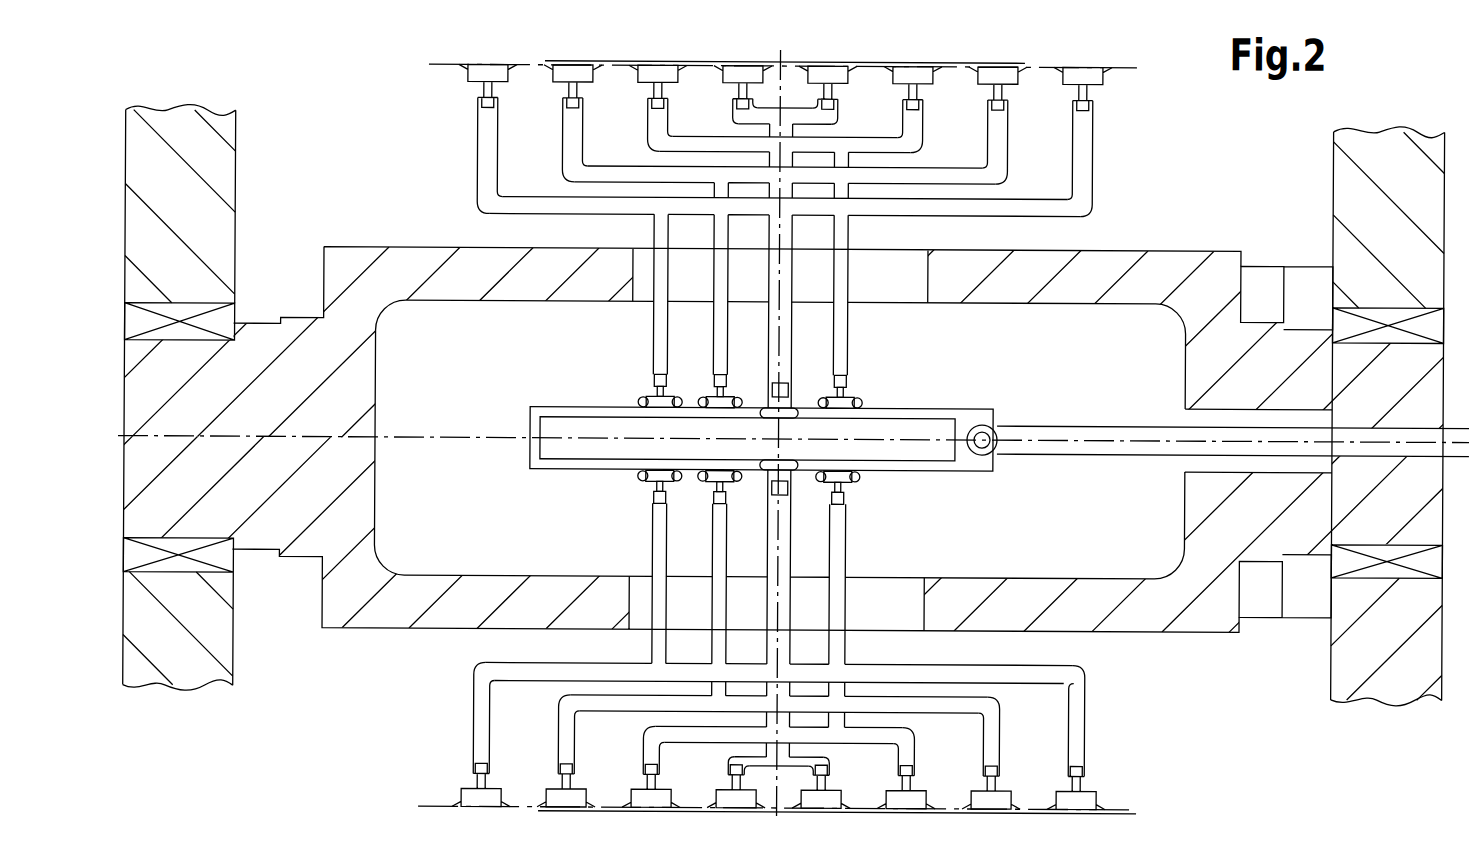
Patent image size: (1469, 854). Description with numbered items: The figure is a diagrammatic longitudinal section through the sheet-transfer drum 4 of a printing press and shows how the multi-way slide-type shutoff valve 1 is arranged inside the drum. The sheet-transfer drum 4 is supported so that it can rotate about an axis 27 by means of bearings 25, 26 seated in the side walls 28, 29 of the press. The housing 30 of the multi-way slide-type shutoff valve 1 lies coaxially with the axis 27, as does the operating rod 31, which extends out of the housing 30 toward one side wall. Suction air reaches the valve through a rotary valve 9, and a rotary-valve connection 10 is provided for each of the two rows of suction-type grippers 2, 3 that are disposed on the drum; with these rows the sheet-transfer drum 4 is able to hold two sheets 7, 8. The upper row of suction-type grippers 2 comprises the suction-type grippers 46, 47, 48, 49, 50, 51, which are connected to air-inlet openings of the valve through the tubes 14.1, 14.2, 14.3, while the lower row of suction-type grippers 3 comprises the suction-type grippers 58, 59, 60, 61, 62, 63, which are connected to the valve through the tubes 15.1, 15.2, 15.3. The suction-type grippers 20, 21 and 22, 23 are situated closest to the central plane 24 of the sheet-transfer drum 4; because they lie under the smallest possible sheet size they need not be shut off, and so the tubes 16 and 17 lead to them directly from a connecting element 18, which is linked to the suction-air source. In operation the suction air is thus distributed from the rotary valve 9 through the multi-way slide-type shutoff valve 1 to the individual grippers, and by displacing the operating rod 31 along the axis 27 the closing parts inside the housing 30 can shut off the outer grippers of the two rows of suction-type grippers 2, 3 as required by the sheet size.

The multi-way slide-type shutoff valve 1 is at (636, 497).
The row of suction-type grippers 2 is at (1120, 83).
The row of suction-type grippers 3 is at (1108, 799).
The sheet-transfer drum 4 is at (1176, 246).
The sheet 7 is at (950, 62).
The sheet 8 is at (930, 812).
The rotary valve 9 is at (1257, 278).
The rotary-valve connection 10 is at (997, 424).
The tube 14.1 is at (660, 330).
The tube 14.2 is at (718, 356).
The tube 14.3 is at (845, 322).
The tube 15.1 is at (660, 518).
The tube 15.2 is at (720, 555).
The tube 15.3 is at (845, 552).
The tube 16 is at (790, 352).
The tube 17 is at (790, 520).
The connecting element 18 is at (905, 452).
The suction-type gripper 20 is at (738, 74).
The suction-type gripper 21 is at (832, 74).
The suction-type gripper 22 is at (738, 797).
The suction-type gripper 23 is at (823, 797).
The central plane 24 is at (786, 53).
The bearing 25 is at (230, 312).
The bearing 26 is at (1340, 318).
The axis 27 is at (390, 439).
The side wall 28 is at (219, 162).
The side wall 29 is at (1340, 172).
The housing 30 is at (530, 465).
The operating rod 31 is at (1085, 452).
The suction-type gripper 46 is at (491, 74).
The suction-type gripper 47 is at (572, 74).
The suction-type gripper 48 is at (650, 74).
The suction-type gripper 49 is at (903, 73).
The suction-type gripper 50 is at (993, 73).
The suction-type gripper 51 is at (1078, 73).
The suction-type gripper 58 is at (488, 797).
The suction-type gripper 59 is at (573, 797).
The suction-type gripper 60 is at (655, 797).
The suction-type gripper 61 is at (905, 797).
The suction-type gripper 62 is at (993, 797).
The suction-type gripper 63 is at (1078, 797).